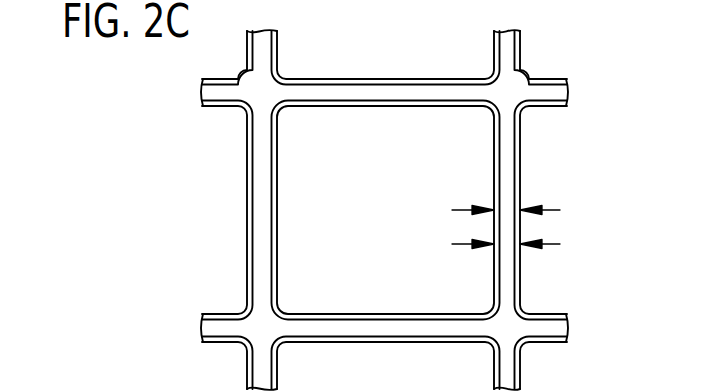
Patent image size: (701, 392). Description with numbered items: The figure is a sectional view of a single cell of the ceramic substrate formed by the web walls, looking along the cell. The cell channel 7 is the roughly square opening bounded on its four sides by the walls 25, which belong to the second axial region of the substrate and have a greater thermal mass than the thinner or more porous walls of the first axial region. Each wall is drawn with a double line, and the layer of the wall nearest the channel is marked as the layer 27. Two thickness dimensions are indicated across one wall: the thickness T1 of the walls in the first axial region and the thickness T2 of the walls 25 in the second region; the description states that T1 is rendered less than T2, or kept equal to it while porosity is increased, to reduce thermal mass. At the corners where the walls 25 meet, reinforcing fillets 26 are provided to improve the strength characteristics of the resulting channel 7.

The cell channel 7 is at (387, 280).
The walls 25 is at (264, 222).
The reinforcing fillets 26 is at (273, 312).
The surface layer of cell wall 27 is at (263, 177).
The thickness of the walls in the first axial region T1 is at (463, 209).
The thickness of the walls in the second axial region T2 is at (463, 245).